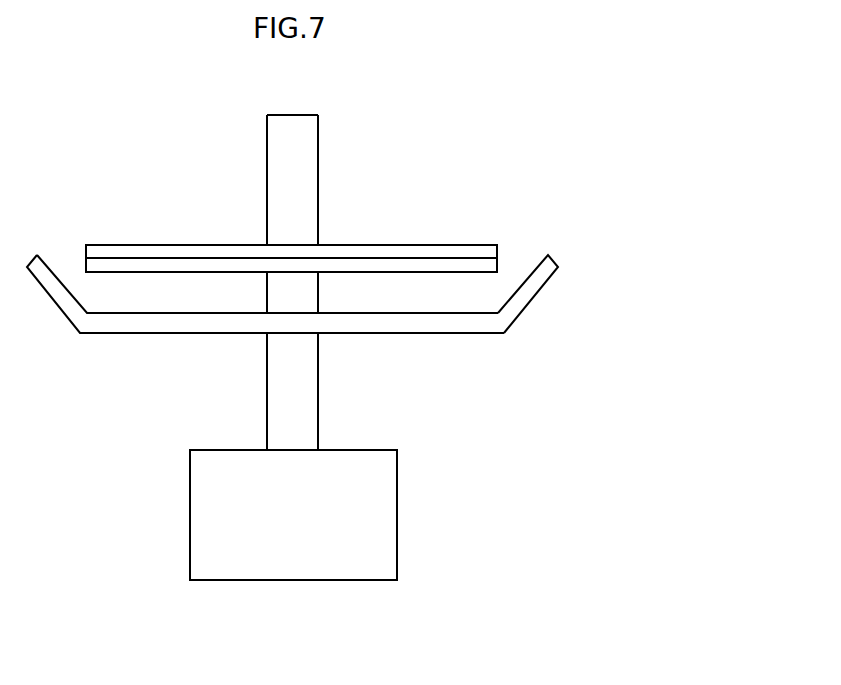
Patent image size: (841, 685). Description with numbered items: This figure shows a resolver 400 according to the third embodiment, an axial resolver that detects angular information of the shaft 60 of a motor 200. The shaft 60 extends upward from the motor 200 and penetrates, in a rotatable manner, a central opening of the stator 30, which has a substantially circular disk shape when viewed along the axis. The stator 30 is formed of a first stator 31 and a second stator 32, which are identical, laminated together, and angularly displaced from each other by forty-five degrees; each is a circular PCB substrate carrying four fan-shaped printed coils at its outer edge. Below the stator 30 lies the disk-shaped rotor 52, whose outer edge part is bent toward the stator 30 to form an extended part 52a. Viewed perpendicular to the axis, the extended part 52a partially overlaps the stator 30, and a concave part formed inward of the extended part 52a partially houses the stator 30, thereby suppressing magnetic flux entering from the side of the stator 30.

The resolver 400 is at (640, 73).
The stator 30 is at (460, 152).
The first stator 31 is at (447, 265).
The second stator 32 is at (382, 250).
The rotor 52 is at (478, 328).
The extended part 52a is at (552, 270).
The shaft 60 is at (305, 405).
The motor 200 is at (383, 522).